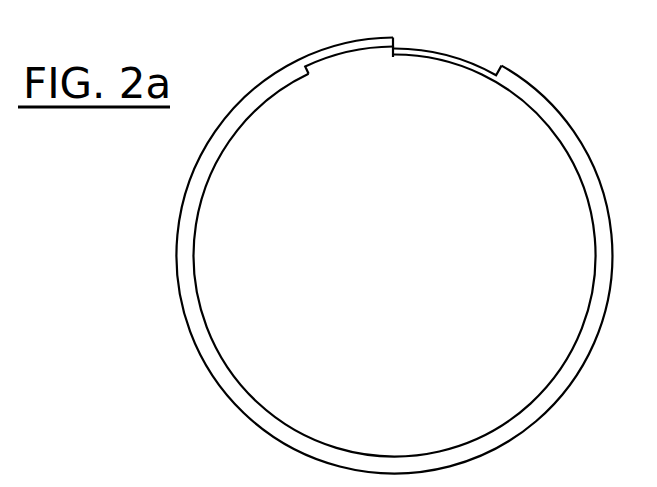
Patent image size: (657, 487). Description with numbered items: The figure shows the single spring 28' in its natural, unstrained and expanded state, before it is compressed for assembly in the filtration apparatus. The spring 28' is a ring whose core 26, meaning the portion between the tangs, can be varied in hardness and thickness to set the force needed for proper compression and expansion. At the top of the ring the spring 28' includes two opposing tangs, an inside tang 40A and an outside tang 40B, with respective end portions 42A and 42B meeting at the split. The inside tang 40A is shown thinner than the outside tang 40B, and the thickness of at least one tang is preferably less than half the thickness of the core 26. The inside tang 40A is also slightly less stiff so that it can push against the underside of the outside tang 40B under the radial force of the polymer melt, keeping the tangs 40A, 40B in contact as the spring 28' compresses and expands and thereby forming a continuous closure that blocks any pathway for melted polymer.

The core 26 is at (203, 351).
The spring 28' is at (415, 255).
The inside tang 40A is at (475, 68).
The outside tang 40B is at (337, 52).
The end portion 42A is at (393, 56).
The end portion 42B is at (393, 39).